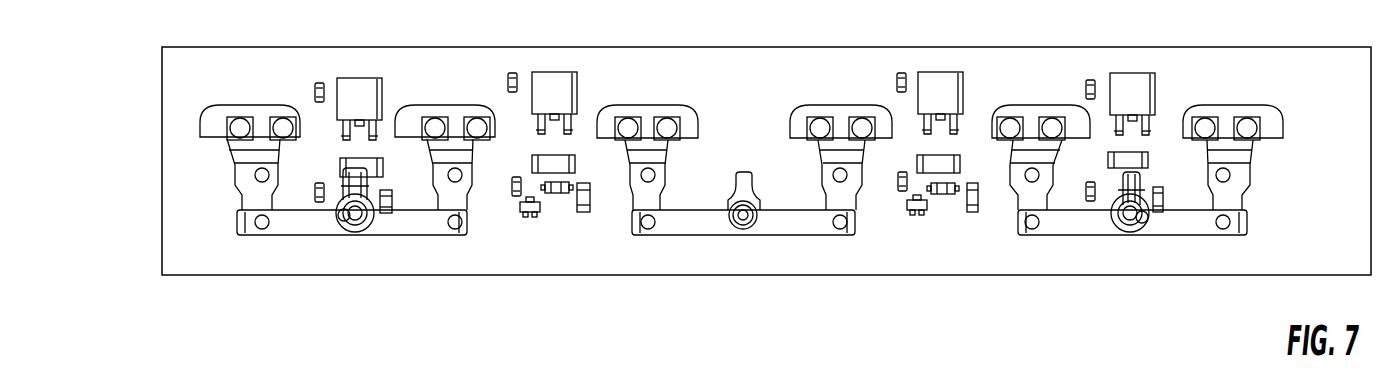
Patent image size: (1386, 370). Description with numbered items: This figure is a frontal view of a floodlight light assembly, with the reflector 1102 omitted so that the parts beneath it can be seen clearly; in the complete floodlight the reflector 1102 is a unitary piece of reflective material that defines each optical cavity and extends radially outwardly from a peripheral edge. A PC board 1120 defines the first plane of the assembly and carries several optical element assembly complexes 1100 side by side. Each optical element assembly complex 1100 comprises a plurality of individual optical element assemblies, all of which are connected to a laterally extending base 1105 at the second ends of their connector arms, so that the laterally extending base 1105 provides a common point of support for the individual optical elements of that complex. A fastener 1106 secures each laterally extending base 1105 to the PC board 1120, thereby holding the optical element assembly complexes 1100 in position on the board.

The optical element assembly complex 1100 is at (741, 214).
The reflector 1102 is at (779, 236).
The laterally extending base 1105 is at (422, 236).
The fastener 1106 is at (353, 232).
The PC board 1120 is at (1313, 65).